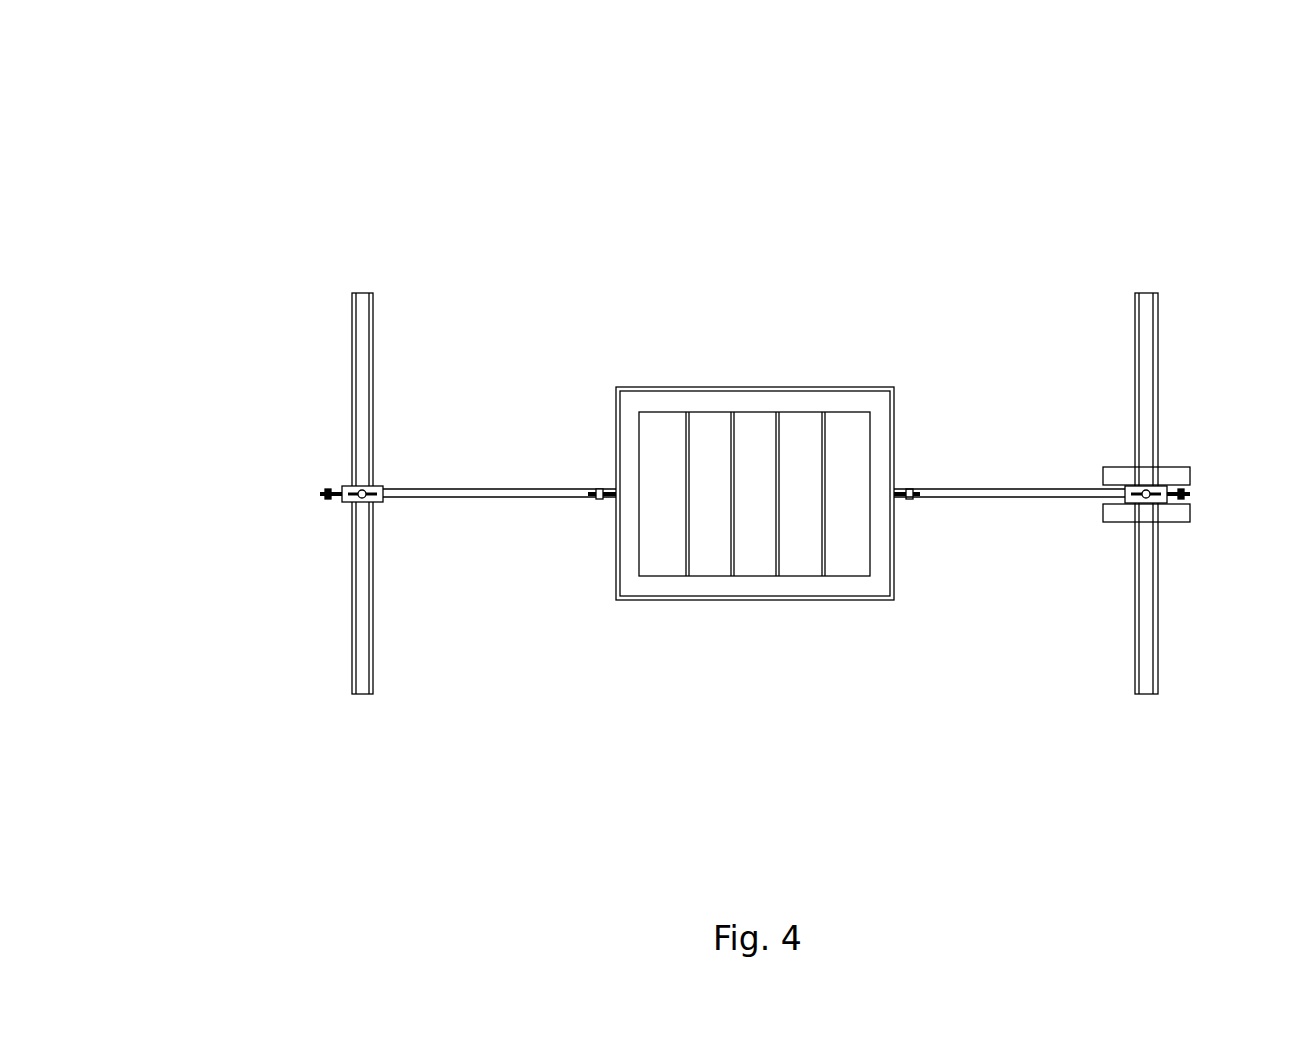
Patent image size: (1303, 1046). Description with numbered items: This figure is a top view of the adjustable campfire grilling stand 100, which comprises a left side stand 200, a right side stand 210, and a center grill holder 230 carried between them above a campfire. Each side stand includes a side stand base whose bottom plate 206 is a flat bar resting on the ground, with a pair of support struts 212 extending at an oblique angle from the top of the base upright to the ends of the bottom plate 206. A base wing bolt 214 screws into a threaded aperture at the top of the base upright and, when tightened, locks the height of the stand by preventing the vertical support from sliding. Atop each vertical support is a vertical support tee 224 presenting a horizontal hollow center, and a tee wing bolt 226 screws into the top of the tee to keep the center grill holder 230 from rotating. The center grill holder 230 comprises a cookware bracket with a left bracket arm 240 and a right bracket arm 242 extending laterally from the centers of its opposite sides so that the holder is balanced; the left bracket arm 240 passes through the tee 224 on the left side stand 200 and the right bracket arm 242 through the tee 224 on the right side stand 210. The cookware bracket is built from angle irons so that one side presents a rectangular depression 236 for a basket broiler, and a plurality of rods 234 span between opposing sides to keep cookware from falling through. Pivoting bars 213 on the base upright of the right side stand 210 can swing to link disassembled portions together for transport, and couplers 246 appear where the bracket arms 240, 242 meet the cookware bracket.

The adjustable campfire grilling stand 100 is at (210, 203).
The left side stand 200 is at (383, 736).
The bottom plate 206 is at (372, 303).
The right side stand 210 is at (1167, 736).
The support struts 212 is at (363, 363).
The bar 213 is at (1178, 474).
The base wing bolt 214 is at (328, 498).
The vertical support tee 224 is at (377, 502).
The tee wing bolt 226 is at (357, 487).
The center grill holder 230 is at (1117, 741).
The rods 234 is at (822, 427).
The rectangular depression 236 is at (877, 401).
The left bracket arm 240 is at (468, 492).
The right bracket arm 242 is at (1073, 491).
The coupler 246 is at (602, 498).